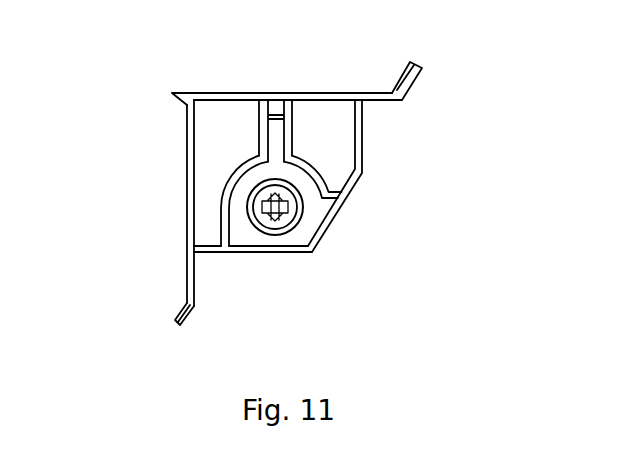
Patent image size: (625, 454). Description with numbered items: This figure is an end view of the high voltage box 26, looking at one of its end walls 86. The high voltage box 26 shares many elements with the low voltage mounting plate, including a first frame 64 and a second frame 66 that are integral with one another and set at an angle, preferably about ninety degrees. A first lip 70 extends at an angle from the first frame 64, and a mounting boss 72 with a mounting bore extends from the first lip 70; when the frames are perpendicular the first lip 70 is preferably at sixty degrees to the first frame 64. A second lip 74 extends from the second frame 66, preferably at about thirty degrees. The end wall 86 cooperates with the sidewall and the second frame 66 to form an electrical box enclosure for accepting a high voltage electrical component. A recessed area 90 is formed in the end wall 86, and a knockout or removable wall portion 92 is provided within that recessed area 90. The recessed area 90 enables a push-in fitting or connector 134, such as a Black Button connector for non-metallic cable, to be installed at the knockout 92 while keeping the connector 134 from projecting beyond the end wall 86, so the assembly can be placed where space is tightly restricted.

The high voltage box 26 is at (149, 99).
The first frame 64 is at (275, 100).
The second frame 66 is at (192, 203).
The first lip 70 is at (383, 102).
The mounting boss 72 is at (409, 84).
The second lip 74 is at (178, 315).
The end wall 86 is at (335, 140).
The recessed area 90 is at (315, 212).
The knockout 92 is at (262, 218).
The push-in fitting or connector 134 is at (283, 222).